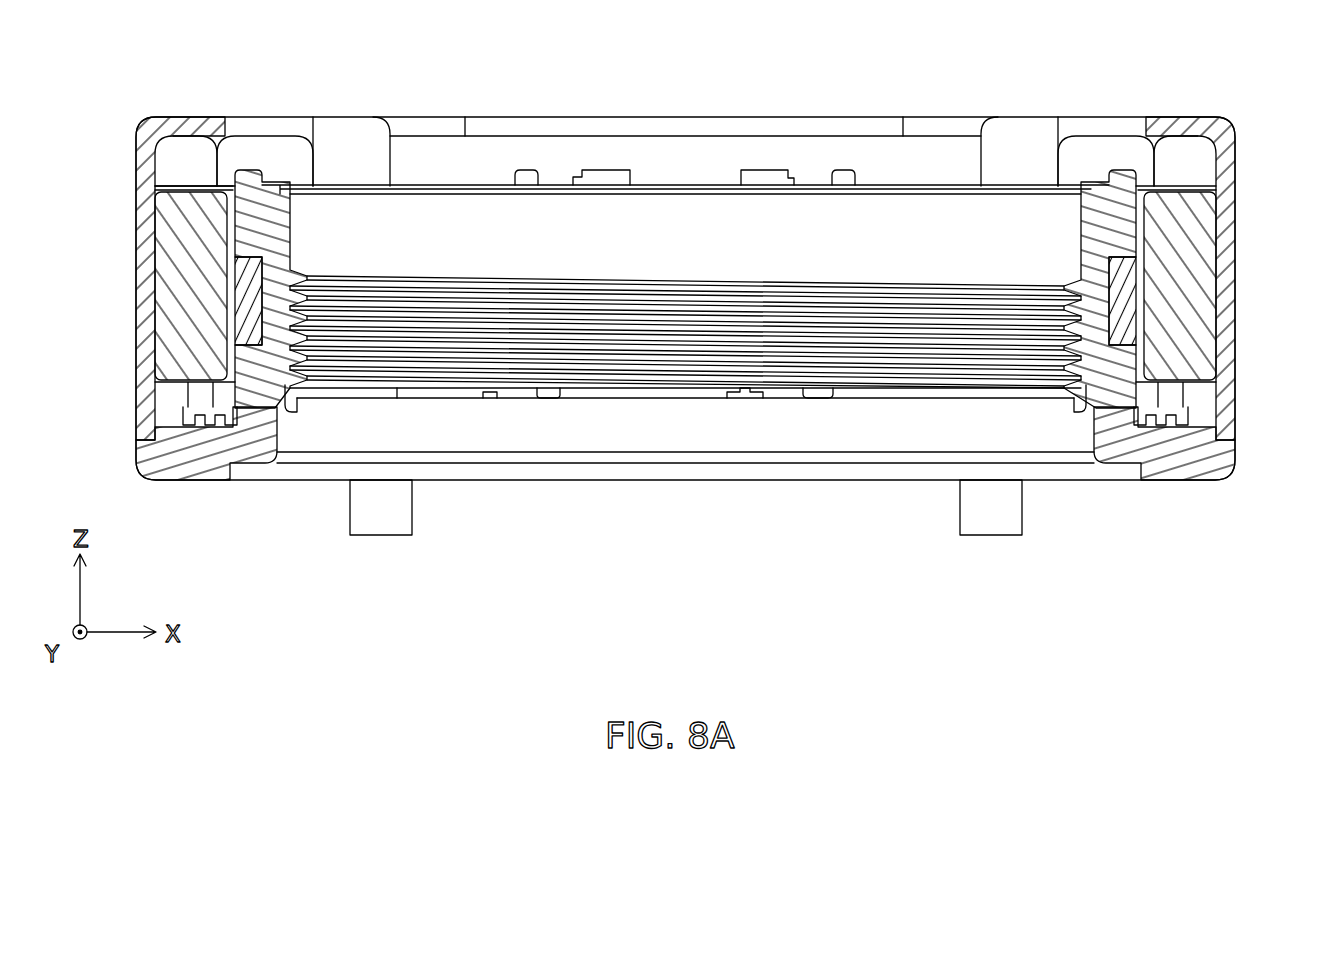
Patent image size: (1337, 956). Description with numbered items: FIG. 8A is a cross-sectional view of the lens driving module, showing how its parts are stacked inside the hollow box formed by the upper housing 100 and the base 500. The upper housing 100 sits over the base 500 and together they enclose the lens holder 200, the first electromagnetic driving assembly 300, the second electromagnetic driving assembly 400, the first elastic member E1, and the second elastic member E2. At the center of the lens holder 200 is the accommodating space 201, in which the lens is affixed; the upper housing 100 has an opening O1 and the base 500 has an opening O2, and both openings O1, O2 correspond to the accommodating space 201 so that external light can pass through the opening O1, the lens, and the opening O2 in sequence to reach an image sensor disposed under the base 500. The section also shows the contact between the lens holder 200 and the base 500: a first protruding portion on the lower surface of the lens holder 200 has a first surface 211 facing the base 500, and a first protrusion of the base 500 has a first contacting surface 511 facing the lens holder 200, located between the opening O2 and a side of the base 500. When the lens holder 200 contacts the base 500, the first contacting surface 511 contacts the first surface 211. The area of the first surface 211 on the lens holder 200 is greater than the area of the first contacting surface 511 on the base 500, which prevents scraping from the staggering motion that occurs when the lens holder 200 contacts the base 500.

The upper housing 100 is at (147, 344).
The lens holder 200 is at (677, 373).
The accommodating space 201 is at (905, 365).
The first surface 211 is at (1133, 407).
The first electromagnetic driving assembly 300 is at (250, 298).
The second electromagnetic driving assembly 400 is at (187, 262).
The base 500 is at (730, 479).
The first contacting surface 511 is at (1103, 407).
The first elastic member E1 is at (212, 400).
The second elastic member E2 is at (165, 173).
The opening O1 is at (668, 157).
The opening O2 is at (695, 425).